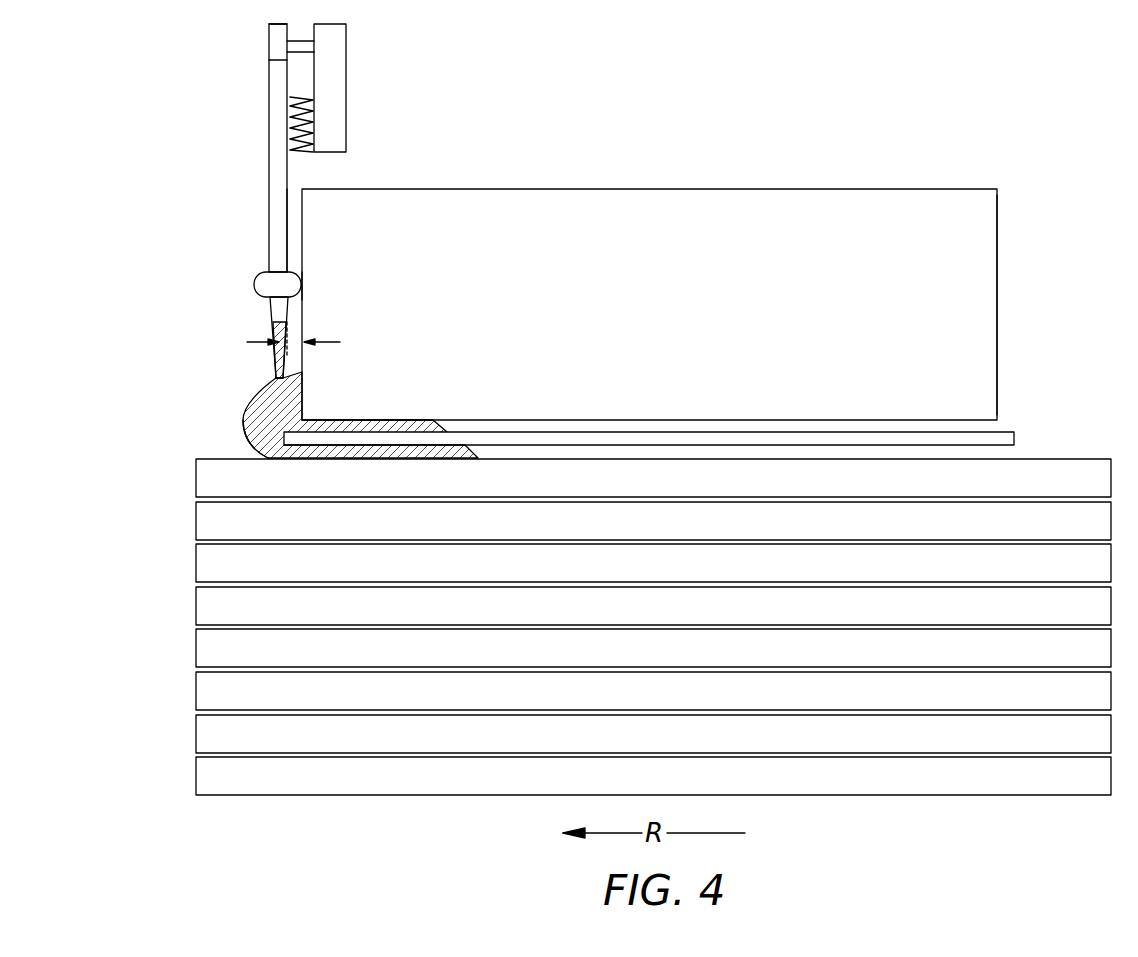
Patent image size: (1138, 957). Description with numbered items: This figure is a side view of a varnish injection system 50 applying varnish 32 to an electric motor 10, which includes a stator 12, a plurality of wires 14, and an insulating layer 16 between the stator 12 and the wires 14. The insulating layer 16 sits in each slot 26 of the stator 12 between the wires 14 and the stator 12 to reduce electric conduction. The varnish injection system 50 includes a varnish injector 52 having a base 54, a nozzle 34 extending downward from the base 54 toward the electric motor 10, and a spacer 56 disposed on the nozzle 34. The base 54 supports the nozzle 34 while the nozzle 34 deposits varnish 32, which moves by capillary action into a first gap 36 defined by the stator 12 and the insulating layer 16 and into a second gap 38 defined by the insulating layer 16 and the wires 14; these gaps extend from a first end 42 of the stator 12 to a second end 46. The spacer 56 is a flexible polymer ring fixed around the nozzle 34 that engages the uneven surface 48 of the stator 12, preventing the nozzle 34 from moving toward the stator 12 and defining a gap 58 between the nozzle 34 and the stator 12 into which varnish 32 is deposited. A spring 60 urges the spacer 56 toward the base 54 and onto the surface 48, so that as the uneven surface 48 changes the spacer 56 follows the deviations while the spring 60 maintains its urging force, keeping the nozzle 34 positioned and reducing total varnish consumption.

The electric motor 10 is at (1099, 81).
The stator 12 is at (522, 189).
The wires 14 is at (196, 775).
The insulating layer 16 is at (1015, 437).
The slot 26 is at (238, 451).
The varnish 32 is at (257, 392).
The nozzle 34 is at (270, 318).
The first gap 36 is at (1005, 422).
The second gap 38 is at (1012, 450).
The first end 42 is at (298, 198).
The second end 46 is at (997, 222).
The uneven surface 48 is at (300, 272).
The varnish injection system 50 is at (196, 69).
The varnish injector 52 is at (269, 128).
The base 54 is at (346, 62).
The spacer 56 is at (254, 285).
The gap 58 is at (311, 343).
The spring 60 is at (305, 151).